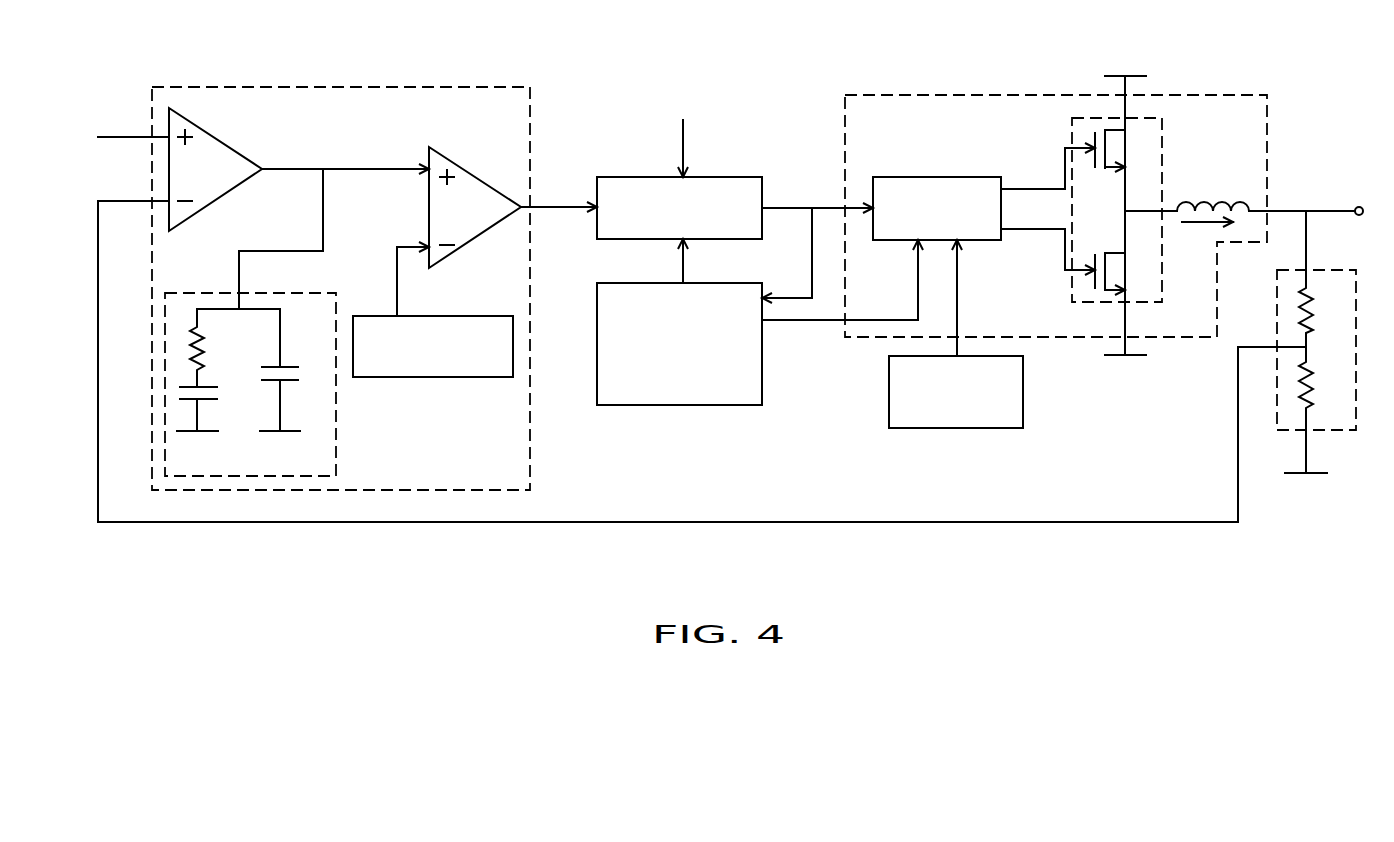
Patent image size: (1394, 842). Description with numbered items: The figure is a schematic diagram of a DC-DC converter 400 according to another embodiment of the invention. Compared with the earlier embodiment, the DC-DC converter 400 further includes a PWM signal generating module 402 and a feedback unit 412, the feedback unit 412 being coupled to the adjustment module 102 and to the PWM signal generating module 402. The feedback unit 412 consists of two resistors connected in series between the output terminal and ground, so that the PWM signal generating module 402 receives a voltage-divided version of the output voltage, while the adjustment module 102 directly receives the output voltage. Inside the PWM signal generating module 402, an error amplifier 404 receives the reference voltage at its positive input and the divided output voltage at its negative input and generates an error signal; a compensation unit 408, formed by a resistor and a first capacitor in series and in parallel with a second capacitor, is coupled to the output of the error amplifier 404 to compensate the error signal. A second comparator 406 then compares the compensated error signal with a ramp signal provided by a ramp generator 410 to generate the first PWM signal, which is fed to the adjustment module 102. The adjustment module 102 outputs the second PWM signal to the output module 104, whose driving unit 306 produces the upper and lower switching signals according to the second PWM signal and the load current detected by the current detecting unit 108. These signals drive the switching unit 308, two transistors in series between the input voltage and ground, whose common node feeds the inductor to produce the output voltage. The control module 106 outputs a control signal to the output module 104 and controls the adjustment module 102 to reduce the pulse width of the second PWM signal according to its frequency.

The DC-DC converter 400 is at (1342, 583).
The PWM signal generating module 402 is at (460, 87).
The error amplifier 404 is at (217, 137).
The second comparator 406 is at (447, 155).
The compensation unit 408 is at (336, 433).
The ramp generator 410 is at (448, 316).
The adjustment module 102 is at (715, 177).
The control module 106 is at (718, 283).
The output module 104 is at (1197, 95).
The driving unit 306 is at (935, 177).
The switching unit 308 is at (1165, 138).
The current detecting unit 108 is at (1000, 428).
The feedback unit 412 is at (1323, 270).